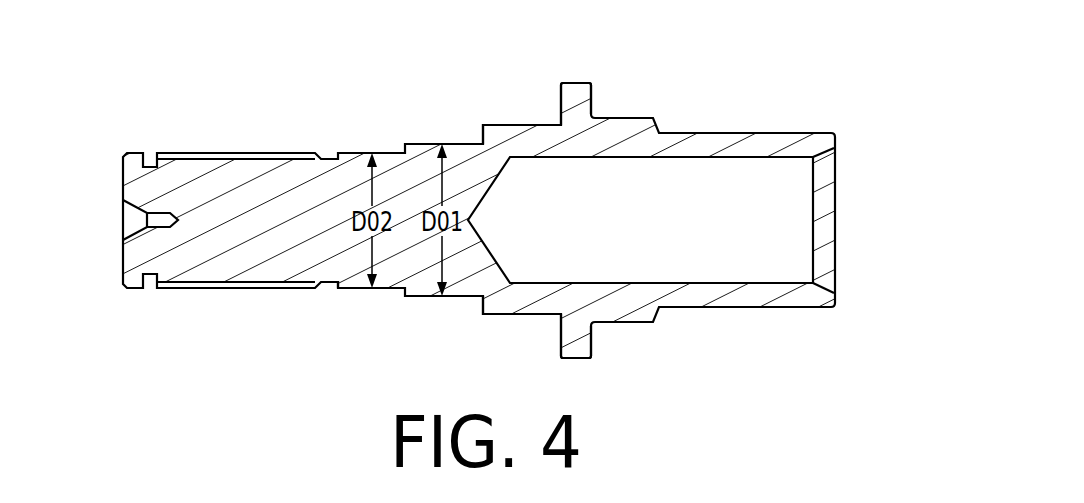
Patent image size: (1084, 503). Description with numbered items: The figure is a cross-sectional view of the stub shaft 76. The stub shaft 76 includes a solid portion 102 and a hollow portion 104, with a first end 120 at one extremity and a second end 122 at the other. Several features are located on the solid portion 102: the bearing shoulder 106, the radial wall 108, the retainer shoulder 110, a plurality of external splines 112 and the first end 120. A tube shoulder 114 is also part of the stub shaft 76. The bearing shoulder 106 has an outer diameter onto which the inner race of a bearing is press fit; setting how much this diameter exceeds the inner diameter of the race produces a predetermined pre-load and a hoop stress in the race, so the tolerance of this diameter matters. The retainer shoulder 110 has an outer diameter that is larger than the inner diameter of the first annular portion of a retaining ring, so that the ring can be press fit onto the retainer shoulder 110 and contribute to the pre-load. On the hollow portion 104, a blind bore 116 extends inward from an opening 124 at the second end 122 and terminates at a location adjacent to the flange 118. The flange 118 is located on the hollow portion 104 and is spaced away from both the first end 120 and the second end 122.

The stub shaft 76 is at (704, 82).
The solid portion 102 is at (338, 315).
The hollow portion 104 is at (704, 330).
The bearing shoulder 106 is at (430, 144).
The radial wall 108 is at (482, 129).
The retainer shoulder 110 is at (362, 152).
The external splines 112 is at (235, 152).
The tube shoulder 114 is at (778, 132).
The blind bore 116 is at (650, 236).
The flange 118 is at (580, 82).
The first end 120 is at (123, 260).
The second end 122 is at (837, 217).
The opening 124 is at (823, 288).